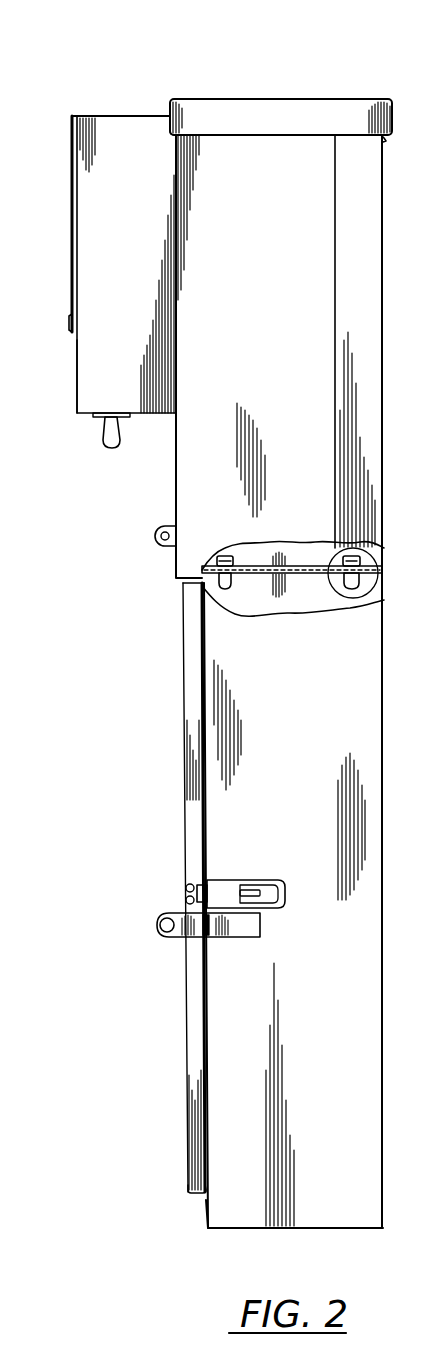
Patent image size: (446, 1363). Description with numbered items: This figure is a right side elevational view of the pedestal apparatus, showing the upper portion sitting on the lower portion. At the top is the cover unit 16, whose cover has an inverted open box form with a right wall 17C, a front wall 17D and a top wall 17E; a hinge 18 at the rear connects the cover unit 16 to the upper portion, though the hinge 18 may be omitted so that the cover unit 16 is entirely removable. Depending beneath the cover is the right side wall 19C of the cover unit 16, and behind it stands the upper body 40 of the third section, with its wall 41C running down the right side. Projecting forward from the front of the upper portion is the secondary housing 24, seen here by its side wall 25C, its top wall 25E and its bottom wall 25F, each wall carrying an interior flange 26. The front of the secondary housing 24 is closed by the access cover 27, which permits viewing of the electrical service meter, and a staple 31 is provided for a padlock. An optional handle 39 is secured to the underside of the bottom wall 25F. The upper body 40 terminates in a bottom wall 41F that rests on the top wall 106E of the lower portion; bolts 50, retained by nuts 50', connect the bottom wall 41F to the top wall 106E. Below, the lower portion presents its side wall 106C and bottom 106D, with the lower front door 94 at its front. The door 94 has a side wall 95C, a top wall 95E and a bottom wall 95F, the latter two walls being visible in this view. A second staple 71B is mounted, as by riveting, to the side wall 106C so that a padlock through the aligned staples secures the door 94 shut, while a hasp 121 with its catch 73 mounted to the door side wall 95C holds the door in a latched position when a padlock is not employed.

The cover unit 16 is at (202, 86).
The right wall 17C is at (337, 129).
The front wall 17D is at (170, 108).
The top wall 17E is at (298, 98).
The hinge 18 is at (387, 141).
The right side wall 19C is at (281, 333).
The housing side wall 41C is at (365, 270).
The upper body 40 is at (383, 458).
The side wall 25C is at (146, 222).
The top wall 25E is at (128, 115).
The interior flange 26 is at (72, 115).
The access cover 27 is at (72, 195).
The secondary housing 24 is at (77, 377).
The staple 31 is at (69, 321).
The bottom wall 25F is at (82, 415).
The handle 39 is at (118, 450).
The bottom wall 41F is at (345, 545).
The top wall 106E is at (353, 608).
The bolts 50 is at (180, 603).
The nuts 50' is at (179, 628).
The side wall 106C is at (313, 710).
The lower housing bottom 106D is at (207, 1218).
The lower front door 94 is at (183, 719).
The side wall 95C is at (193, 1040).
The top wall 95E is at (183, 587).
The bottom wall 95F is at (195, 1195).
The hasp 121 is at (227, 886).
The catch 73 is at (186, 890).
The second staple 71B is at (157, 930).